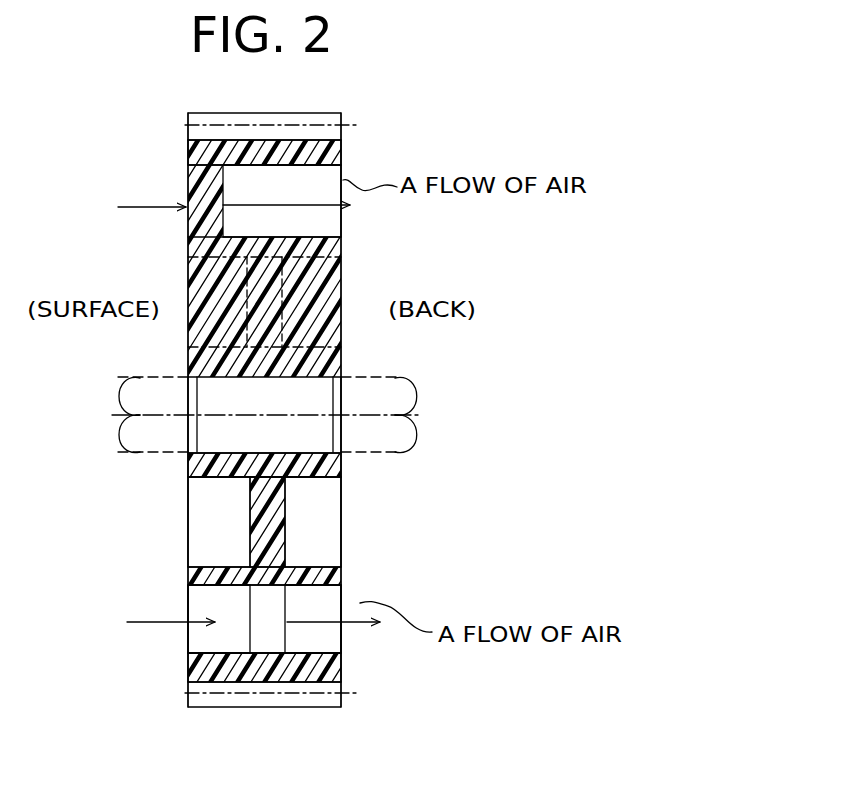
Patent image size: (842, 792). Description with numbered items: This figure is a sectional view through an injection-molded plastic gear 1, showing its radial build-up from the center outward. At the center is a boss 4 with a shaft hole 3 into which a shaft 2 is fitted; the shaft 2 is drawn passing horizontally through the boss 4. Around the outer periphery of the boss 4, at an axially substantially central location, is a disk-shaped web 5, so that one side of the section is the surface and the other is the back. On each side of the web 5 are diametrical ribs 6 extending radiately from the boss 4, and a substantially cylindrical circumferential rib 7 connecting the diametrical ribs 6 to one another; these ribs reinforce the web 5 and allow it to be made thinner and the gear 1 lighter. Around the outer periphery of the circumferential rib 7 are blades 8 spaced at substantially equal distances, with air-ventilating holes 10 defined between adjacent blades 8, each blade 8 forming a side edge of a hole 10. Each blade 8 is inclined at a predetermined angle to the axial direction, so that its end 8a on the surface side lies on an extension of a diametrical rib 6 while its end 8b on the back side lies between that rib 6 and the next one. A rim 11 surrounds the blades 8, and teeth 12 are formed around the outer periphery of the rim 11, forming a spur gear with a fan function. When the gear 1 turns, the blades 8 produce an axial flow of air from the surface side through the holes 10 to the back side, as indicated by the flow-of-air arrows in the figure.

The injection-molded plastic gear 1 is at (345, 166).
The shaft 2 is at (378, 375).
The shaft hole 3 is at (300, 440).
The boss 4 is at (212, 478).
The web 5 is at (283, 510).
The diametrical ribs 6 is at (190, 545).
The circumferential rib 7 is at (243, 585).
The blades 8 is at (188, 170).
The end on the surface side 8a is at (250, 632).
The end on the back side 8b is at (343, 650).
The air-ventilating holes 10 is at (343, 225).
The rim 11 is at (200, 707).
The teeth 12 is at (315, 707).